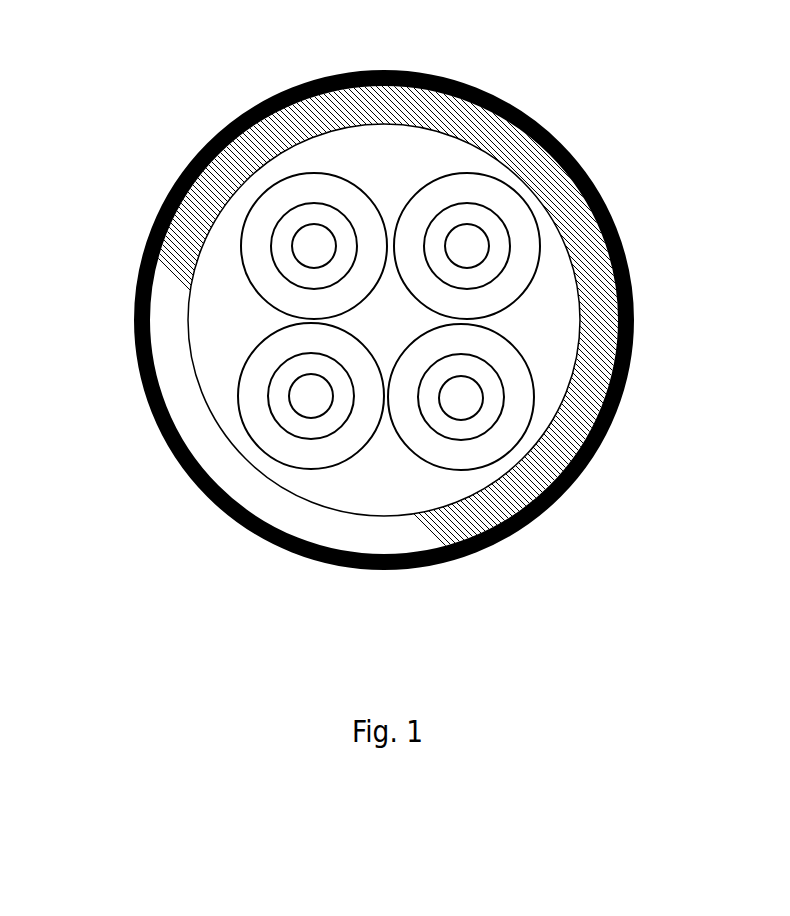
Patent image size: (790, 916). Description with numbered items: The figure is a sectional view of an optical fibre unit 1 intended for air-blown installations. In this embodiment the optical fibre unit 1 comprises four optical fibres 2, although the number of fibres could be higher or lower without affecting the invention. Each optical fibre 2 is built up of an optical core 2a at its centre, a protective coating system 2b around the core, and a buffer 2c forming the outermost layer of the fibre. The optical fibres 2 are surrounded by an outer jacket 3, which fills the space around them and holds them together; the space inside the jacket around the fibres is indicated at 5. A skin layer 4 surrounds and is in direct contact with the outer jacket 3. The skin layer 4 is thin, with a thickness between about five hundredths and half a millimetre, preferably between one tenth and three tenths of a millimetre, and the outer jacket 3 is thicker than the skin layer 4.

The optical fibre unit 1 is at (190, 92).
The optical fibre 2 is at (230, 239).
The optical core 2a is at (462, 400).
The protective coating system 2b is at (460, 432).
The buffer 2c is at (512, 398).
The outer jacket 3 is at (600, 322).
The skin layer 4 is at (137, 292).
The filler 5 is at (217, 343).